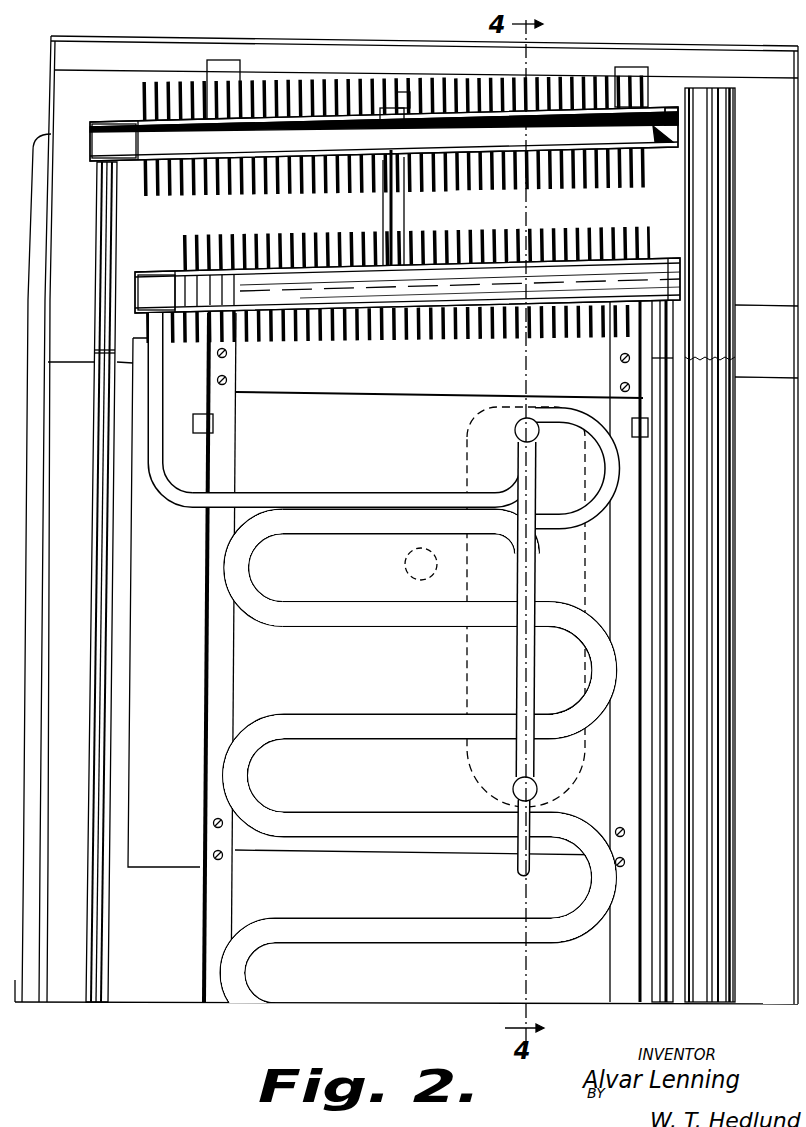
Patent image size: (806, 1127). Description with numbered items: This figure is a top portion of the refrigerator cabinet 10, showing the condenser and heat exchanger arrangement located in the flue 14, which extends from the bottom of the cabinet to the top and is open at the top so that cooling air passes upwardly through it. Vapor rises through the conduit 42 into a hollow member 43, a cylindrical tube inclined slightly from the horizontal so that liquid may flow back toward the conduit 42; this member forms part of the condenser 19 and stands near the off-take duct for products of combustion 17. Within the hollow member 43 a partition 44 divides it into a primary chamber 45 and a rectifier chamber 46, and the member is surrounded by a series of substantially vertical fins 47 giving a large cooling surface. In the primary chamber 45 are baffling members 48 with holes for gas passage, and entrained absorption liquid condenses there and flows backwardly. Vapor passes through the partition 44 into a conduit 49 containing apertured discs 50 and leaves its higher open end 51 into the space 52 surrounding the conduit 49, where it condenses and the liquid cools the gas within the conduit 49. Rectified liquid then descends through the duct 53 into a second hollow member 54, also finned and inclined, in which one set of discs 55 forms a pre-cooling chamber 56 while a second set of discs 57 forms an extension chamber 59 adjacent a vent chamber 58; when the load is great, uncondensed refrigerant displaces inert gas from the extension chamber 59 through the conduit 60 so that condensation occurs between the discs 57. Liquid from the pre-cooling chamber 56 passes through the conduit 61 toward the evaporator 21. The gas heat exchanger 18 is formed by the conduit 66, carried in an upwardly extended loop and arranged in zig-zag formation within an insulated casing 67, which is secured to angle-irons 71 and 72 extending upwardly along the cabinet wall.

The refrigerator cabinet 10 is at (15, 985).
The flue 14 is at (164, 637).
The off-take duct for products of combustion 17 is at (720, 232).
The gas heat exchanger 18 is at (394, 728).
The condenser 19 is at (277, 168).
The evaporator 21 is at (467, 564).
The conduit 42 is at (95, 575).
The hollow member 43 is at (113, 122).
The partition 44 is at (384, 118).
The primary chamber 45 is at (341, 72).
The rectifier chamber 46 is at (672, 100).
The fins 47 is at (149, 92).
The baffling members 48 is at (163, 140).
The conduit 49 is at (405, 98).
The discs 50 is at (541, 110).
The open end 51 is at (680, 140).
The space around conduit 52 is at (497, 110).
The duct 53 is at (402, 210).
The second hollow member 54 is at (399, 333).
The discs 55 is at (255, 318).
The pre-cooling chamber 56 is at (156, 291).
The discs 57 is at (418, 290).
The vent chamber 58 is at (645, 285).
The extension chamber 59 is at (563, 283).
The conduit 60 is at (662, 535).
The conduit 61 is at (330, 492).
The conduit 66 is at (380, 614).
The casing 67 is at (213, 467).
The angle-iron 71 is at (220, 660).
The angle-iron 72 is at (617, 957).